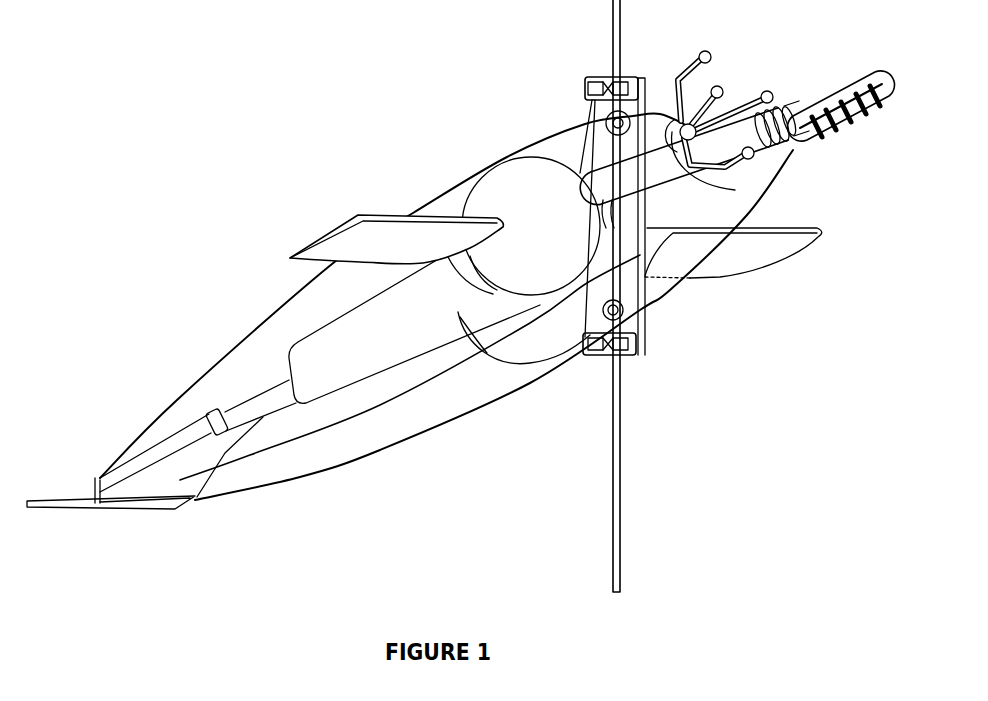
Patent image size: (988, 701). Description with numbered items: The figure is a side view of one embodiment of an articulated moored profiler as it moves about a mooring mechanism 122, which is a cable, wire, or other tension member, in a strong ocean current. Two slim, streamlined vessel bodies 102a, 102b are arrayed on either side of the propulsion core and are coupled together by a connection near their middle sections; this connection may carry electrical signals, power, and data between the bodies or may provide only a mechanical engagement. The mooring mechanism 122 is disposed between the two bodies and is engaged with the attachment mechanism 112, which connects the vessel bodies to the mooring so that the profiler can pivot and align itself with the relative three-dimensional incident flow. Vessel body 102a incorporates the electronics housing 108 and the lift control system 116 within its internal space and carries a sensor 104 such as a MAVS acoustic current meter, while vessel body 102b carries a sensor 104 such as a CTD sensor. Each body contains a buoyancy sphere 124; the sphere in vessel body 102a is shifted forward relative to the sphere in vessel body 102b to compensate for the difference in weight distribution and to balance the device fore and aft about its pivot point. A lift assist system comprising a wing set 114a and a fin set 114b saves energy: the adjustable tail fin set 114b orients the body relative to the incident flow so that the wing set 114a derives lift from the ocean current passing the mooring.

The vessel body 102a is at (418, 178).
The vessel body 102b is at (794, 185).
The sensor 104 is at (817, 135).
The electronics housing 108 is at (296, 350).
The attachment mechanism 112 is at (662, 317).
The wing set 114a is at (324, 229).
The fin set 114b is at (72, 496).
The lift control system 116 is at (216, 410).
The mooring mechanism 122 is at (615, 513).
The buoyancy sphere 124 is at (505, 160).